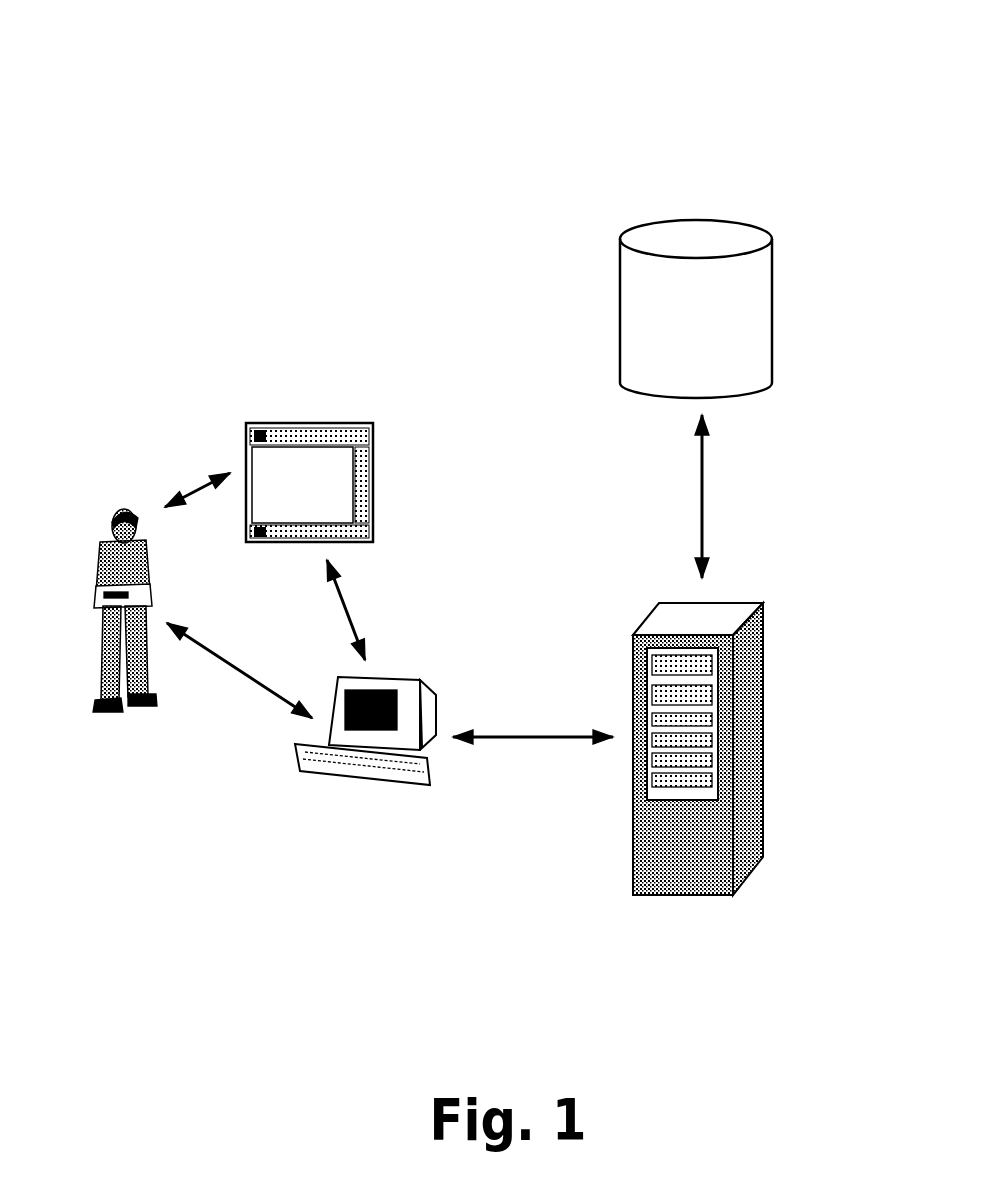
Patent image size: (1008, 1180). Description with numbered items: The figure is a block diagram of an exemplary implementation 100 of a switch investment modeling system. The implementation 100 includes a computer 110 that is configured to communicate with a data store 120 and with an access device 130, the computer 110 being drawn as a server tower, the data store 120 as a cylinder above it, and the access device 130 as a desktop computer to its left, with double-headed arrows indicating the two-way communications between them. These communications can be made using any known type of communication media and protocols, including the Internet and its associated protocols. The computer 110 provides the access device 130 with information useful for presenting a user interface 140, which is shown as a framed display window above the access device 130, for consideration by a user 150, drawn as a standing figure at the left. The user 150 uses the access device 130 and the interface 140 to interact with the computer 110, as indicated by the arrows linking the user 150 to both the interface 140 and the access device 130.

The implementation 100 is at (726, 80).
The computer 110 is at (673, 896).
The data store 120 is at (626, 386).
The access device 130 is at (400, 792).
The user interface 140 is at (300, 421).
The user 150 is at (145, 706).